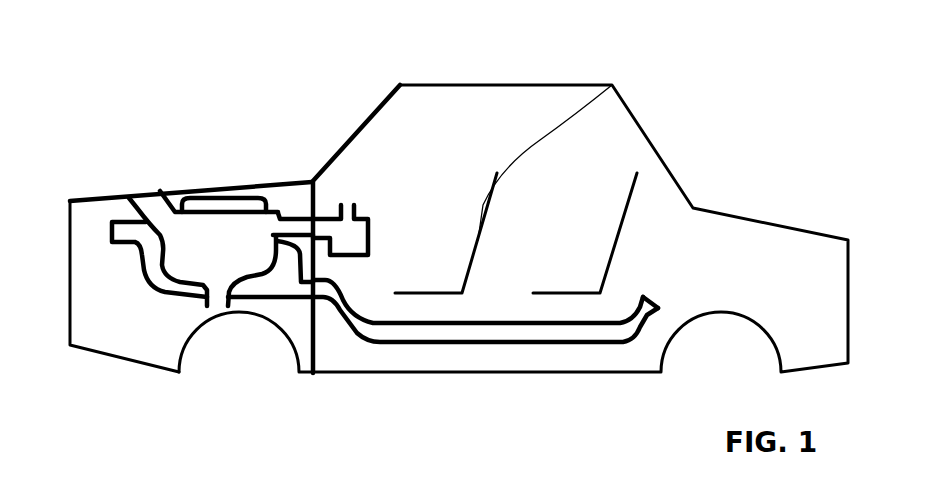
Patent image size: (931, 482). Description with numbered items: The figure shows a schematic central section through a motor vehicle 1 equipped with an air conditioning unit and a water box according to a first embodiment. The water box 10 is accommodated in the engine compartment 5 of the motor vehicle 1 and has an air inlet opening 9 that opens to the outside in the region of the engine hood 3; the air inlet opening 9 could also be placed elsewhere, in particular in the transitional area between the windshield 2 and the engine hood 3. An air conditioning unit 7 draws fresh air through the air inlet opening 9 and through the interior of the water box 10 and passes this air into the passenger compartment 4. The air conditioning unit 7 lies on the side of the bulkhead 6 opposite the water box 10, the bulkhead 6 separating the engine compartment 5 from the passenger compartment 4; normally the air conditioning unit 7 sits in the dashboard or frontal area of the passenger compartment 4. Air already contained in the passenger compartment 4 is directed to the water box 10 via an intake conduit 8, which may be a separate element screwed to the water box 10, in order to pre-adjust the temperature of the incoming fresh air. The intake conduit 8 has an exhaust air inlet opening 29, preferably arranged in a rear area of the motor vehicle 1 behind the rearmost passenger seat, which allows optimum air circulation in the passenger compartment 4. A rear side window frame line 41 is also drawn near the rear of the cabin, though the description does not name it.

The motor vehicle 1 is at (678, 137).
The windshield 2 is at (353, 133).
The engine hood 3 is at (195, 190).
The passenger compartment 4 is at (503, 123).
The rear side window frame 41 is at (627, 200).
The engine compartment 5 is at (125, 330).
The bulkhead 6 is at (313, 335).
The air conditioning unit 7 is at (350, 237).
The intake conduit 8 is at (583, 340).
The air inlet opening 9 is at (140, 193).
The water box 10 is at (123, 291).
The exhaust air inlet opening 29 is at (647, 308).